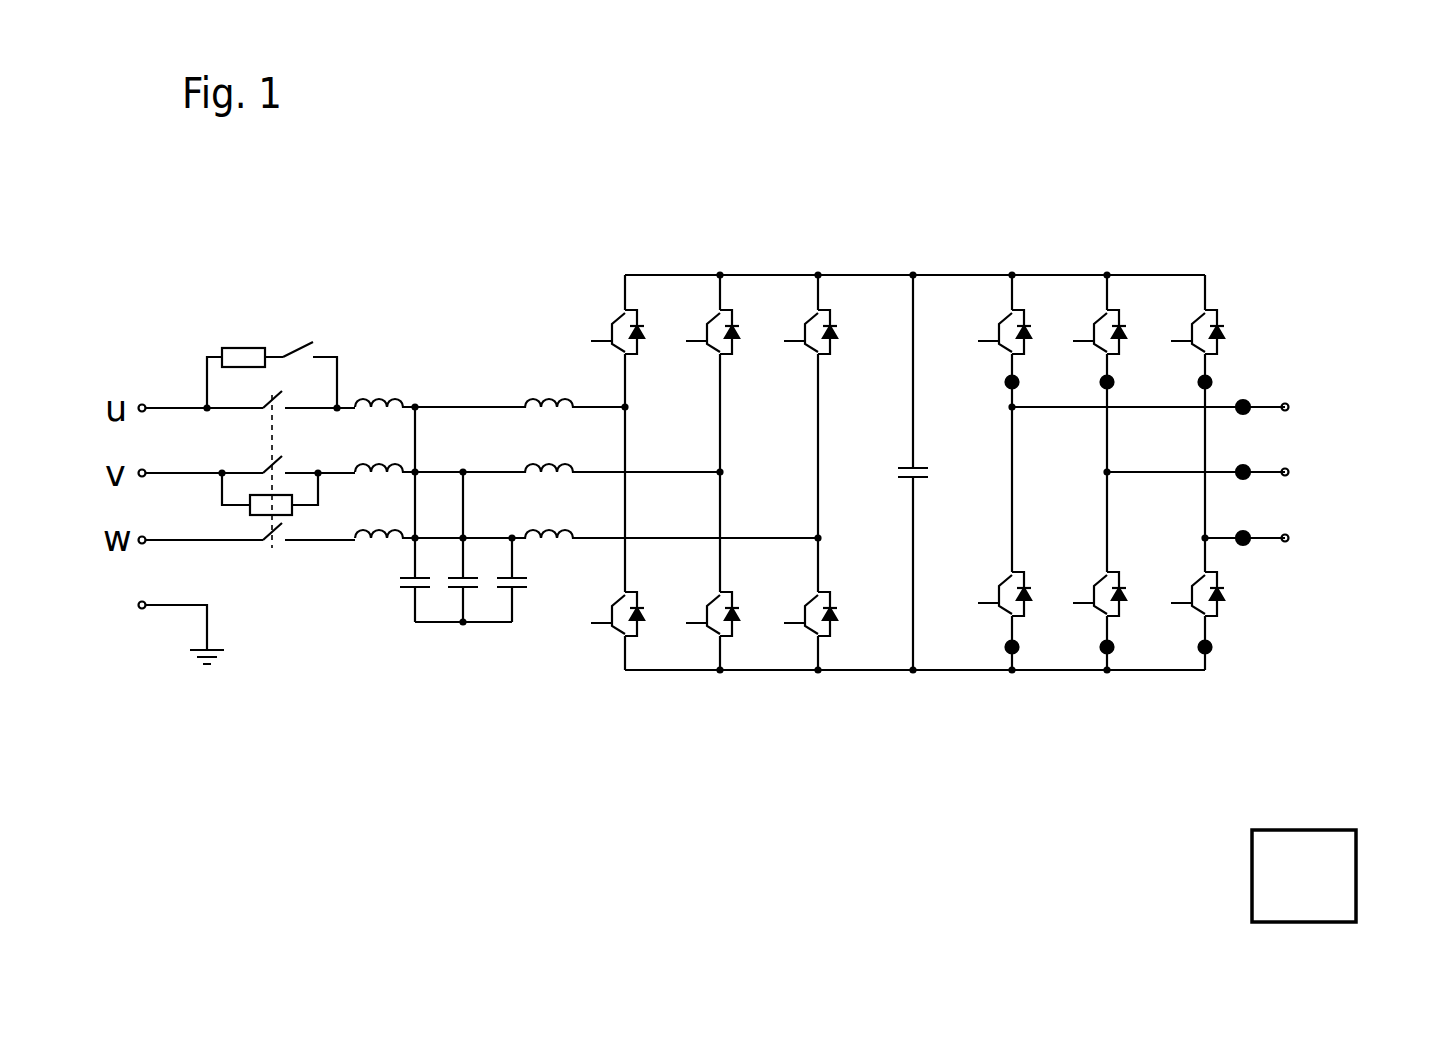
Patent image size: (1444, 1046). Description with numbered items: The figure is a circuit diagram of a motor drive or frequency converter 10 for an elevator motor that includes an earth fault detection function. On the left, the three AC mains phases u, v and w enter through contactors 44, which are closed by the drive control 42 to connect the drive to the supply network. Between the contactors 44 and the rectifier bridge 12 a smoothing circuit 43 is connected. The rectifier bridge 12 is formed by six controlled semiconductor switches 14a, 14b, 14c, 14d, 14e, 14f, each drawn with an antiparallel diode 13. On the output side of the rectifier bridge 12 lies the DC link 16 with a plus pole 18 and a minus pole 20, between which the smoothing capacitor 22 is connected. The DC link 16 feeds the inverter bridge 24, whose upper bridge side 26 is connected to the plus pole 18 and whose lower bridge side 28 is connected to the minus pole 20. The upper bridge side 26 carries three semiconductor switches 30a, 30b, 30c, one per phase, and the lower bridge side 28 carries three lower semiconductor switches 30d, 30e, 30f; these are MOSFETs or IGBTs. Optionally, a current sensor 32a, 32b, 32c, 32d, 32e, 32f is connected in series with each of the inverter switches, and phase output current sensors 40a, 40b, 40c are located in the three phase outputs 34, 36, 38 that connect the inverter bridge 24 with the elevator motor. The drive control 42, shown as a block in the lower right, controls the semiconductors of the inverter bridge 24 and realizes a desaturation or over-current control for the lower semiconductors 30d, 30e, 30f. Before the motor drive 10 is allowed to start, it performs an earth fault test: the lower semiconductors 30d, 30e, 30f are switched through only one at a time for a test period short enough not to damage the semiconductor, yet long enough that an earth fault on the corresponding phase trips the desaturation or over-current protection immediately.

The frequency converter 10 is at (572, 106).
The rectifier bridge 12 is at (576, 232).
The diode 13 is at (628, 322).
The controlled semiconductor switch 14a is at (600, 330).
The controlled semiconductor switch 14b is at (703, 328).
The controlled semiconductor switch 14c is at (800, 325).
The controlled semiconductor switch 14d is at (613, 623).
The controlled semiconductor switch 14e is at (708, 623).
The controlled semiconductor switch 14f is at (802, 622).
The DC link 16 is at (876, 230).
The plus pole of the DC link 18 is at (892, 273).
The minus pole of the DC link 20 is at (868, 672).
The smoothing capacitor 22 is at (903, 477).
The inverter bridge 24 is at (1095, 186).
The upper bridge side 26 is at (1280, 270).
The lower bridge side 28 is at (1290, 633).
The semiconductor switch of the inverter bridge 30a is at (1000, 312).
The semiconductor switch of the inverter bridge 30b is at (1095, 318).
The semiconductor switch of the inverter bridge 30c is at (1192, 330).
The lower semiconductor switch 30d is at (992, 603).
The lower semiconductor switch 30e is at (1087, 603).
The lower semiconductor switch 30f is at (1185, 603).
The current sensor 32a is at (1008, 382).
The current sensor 32b is at (1105, 387).
The current sensor 32c is at (1208, 378).
The current sensor 32d is at (1008, 655).
The current sensor 32e is at (1105, 655).
The current sensor 32f is at (1203, 655).
The first phase output of the inverter bridge 34 is at (1176, 408).
The second phase output of the inverter bridge 36 is at (1223, 473).
The third phase output of the inverter bridge 38 is at (1270, 538).
The phase output current sensor 40a is at (1248, 403).
The phase output current sensor 40b is at (1248, 468).
The phase output current sensor 40c is at (1248, 541).
The drive control 42 is at (1298, 862).
The smoothing circuit 43 is at (438, 370).
The contactors 44 is at (233, 326).